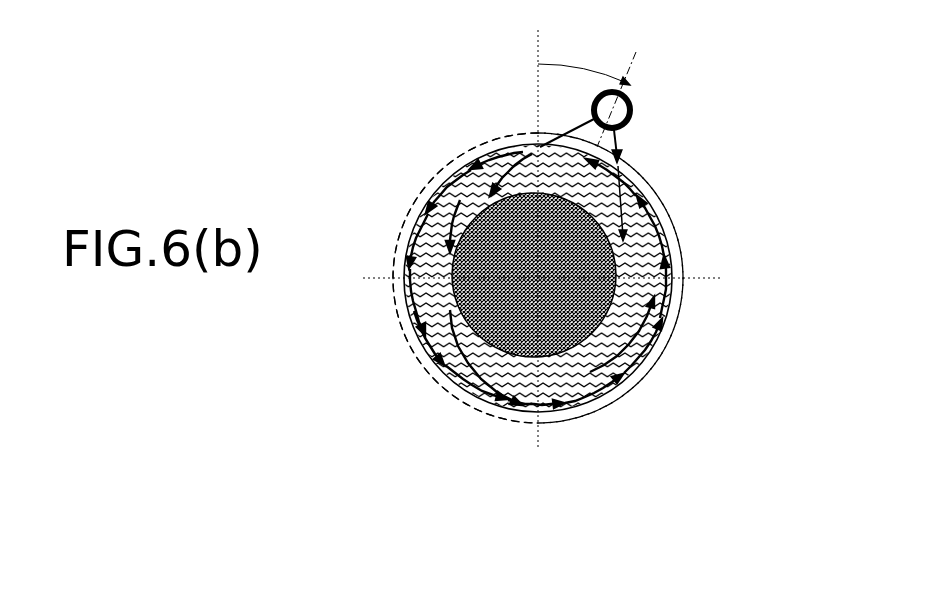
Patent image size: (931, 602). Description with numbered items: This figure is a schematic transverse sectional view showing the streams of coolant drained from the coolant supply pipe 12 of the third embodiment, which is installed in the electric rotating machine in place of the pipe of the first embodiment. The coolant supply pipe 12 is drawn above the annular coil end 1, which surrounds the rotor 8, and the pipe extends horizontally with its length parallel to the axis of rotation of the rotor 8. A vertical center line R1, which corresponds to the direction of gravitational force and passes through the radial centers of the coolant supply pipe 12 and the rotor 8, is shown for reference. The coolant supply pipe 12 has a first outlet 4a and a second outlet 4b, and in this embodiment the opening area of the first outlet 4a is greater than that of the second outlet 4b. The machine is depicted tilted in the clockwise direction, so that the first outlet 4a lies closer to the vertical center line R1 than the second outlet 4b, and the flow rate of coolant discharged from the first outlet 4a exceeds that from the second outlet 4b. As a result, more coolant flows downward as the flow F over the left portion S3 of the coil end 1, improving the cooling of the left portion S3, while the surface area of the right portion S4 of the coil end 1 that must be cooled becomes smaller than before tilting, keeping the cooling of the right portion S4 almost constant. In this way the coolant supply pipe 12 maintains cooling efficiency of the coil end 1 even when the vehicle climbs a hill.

The vertical center line R1 is at (537, 52).
The first outlet 4a is at (590, 125).
The second outlet 4b is at (626, 126).
The coolant supply pipe 12 is at (633, 100).
The left portion S3 is at (400, 230).
The right portion S4 is at (690, 245).
The flow F is at (645, 338).
The coil end 1 is at (470, 413).
The rotor 8 is at (587, 413).